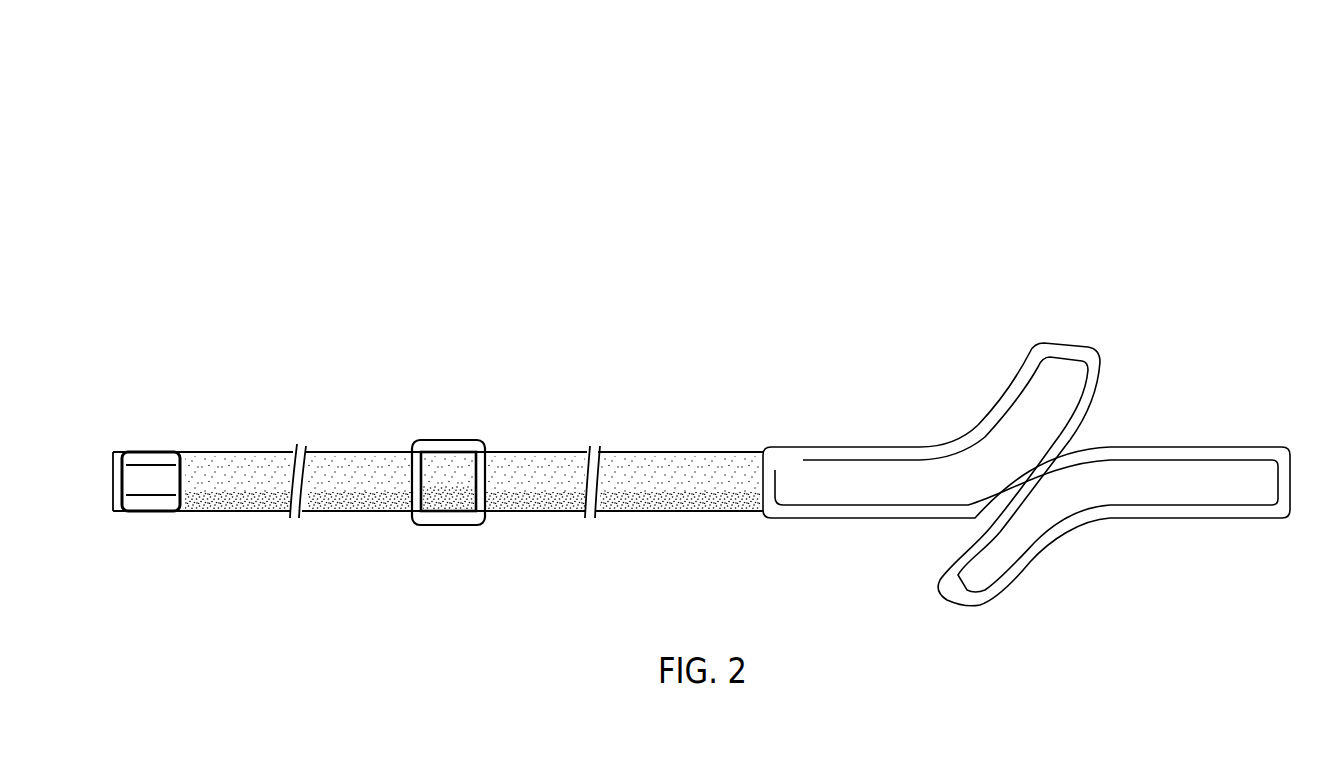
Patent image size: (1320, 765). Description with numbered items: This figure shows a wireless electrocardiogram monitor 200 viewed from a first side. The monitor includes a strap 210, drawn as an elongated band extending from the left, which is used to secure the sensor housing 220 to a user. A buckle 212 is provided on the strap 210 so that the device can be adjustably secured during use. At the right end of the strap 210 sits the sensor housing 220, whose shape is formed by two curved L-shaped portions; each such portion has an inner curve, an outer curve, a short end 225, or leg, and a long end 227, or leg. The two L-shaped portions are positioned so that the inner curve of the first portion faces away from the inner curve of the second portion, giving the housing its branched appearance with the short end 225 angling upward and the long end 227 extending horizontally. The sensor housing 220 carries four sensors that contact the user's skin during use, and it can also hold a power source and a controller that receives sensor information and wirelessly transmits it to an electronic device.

The wireless electrocardiogram monitor 200 is at (1171, 95).
The strap 210 is at (622, 462).
The buckle 212 is at (463, 447).
The sensor housing 220 is at (1270, 313).
The short end 225 is at (1112, 353).
The long end 227 is at (1288, 548).